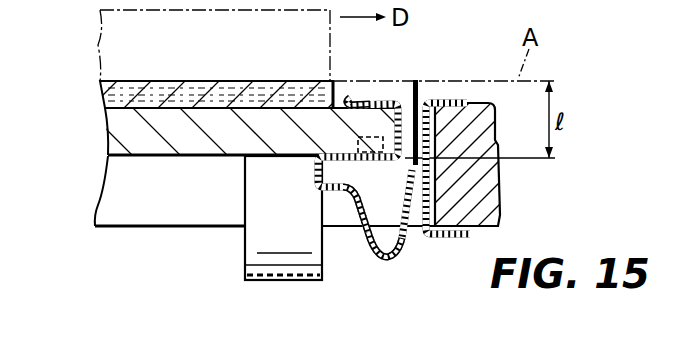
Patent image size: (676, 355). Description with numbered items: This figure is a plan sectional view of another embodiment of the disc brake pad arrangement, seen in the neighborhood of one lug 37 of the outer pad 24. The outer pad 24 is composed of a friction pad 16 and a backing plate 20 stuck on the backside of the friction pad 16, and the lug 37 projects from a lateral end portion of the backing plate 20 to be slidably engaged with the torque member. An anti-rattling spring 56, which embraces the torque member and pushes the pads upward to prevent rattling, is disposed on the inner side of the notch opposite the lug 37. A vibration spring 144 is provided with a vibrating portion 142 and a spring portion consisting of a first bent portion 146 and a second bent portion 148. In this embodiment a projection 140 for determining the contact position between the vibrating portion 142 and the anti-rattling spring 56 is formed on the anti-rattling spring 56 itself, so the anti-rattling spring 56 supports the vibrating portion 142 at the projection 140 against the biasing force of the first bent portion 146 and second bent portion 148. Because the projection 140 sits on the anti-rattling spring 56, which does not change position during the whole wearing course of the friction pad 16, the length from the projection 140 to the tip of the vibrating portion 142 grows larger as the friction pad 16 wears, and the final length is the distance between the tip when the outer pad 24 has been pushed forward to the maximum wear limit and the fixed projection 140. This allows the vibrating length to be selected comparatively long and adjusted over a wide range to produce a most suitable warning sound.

The friction pad 16 is at (158, 95).
The backing plate 20 is at (178, 137).
The outer pad 24 is at (131, 170).
The lug 37 is at (380, 125).
The anti-rattling spring 56 is at (425, 252).
The projection 140 is at (411, 162).
The vibrating portion 142 is at (428, 100).
The vibration spring 144 is at (354, 246).
The first bent portion 146 is at (312, 180).
The second bent portion 148 is at (385, 261).